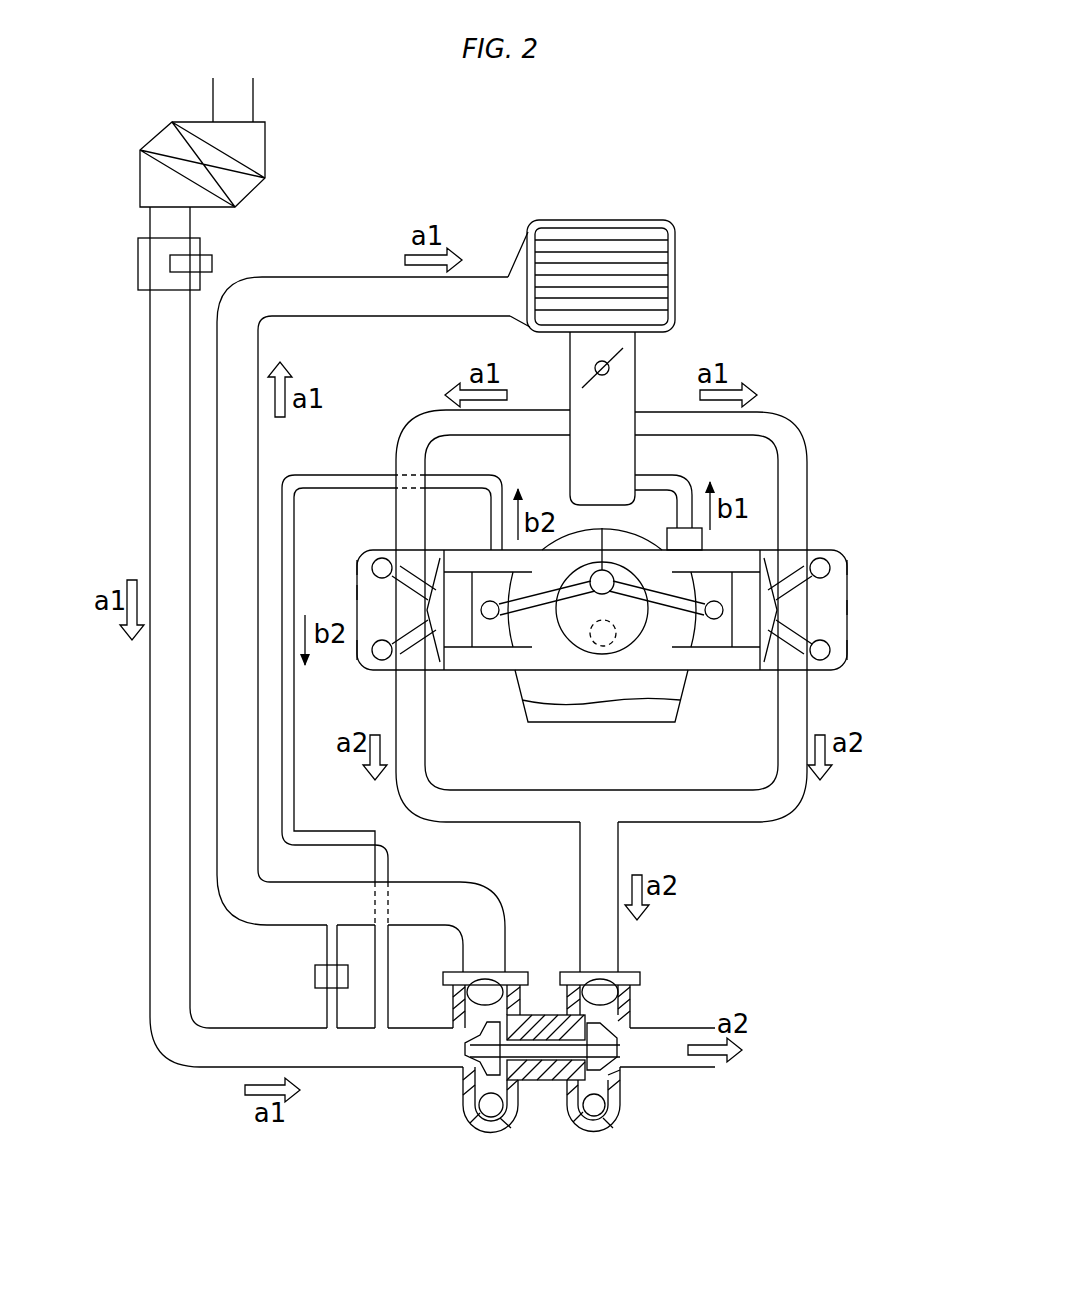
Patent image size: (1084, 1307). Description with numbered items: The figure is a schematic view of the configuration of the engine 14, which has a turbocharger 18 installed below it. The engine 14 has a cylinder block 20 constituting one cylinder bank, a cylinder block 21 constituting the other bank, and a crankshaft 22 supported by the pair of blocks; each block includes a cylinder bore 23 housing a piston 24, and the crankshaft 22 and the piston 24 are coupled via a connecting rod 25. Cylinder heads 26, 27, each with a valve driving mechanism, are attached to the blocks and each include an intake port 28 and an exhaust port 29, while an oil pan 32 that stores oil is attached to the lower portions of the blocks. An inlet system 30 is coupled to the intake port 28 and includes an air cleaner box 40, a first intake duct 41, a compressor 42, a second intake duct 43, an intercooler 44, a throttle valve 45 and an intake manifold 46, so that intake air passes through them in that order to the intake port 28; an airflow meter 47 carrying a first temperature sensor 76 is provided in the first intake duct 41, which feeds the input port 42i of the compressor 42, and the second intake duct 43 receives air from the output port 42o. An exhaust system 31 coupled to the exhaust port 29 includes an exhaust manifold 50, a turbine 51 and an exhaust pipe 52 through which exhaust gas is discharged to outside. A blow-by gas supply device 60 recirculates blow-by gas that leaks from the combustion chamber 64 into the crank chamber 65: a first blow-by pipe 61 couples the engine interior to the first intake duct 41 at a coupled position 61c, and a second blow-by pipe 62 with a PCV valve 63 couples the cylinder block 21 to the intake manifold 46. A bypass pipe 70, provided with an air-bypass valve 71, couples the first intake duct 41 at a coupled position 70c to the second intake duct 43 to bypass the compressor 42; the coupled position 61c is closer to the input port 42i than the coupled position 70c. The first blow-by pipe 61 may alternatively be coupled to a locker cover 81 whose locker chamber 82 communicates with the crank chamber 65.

The engine 14 is at (848, 548).
The turbocharger 18 is at (545, 1112).
The cylinder block 20 is at (500, 674).
The cylinder block 21 is at (692, 674).
The crankshaft 22 is at (592, 562).
The cylinder bore 23 is at (465, 580).
The piston 24 is at (704, 606).
The connecting rod 25 is at (592, 636).
The cylinder head 26 is at (355, 666).
The cylinder head 27 is at (851, 662).
The intake port 28 is at (412, 552).
The exhaust port 29 is at (410, 668).
The inlet system 30 is at (720, 180).
The exhaust system 31 is at (782, 868).
The oil pan 32 is at (580, 722).
The air cleaner box 40 is at (190, 121).
The first intake duct 41 is at (148, 795).
The compressor 42 is at (450, 1102).
The input port 42i is at (450, 1045).
The output port 42o is at (490, 975).
The second intake duct 43 is at (345, 275).
The intercooler 44 is at (598, 218).
The throttle valve 45 is at (583, 385).
The intake manifold 46 is at (803, 432).
The airflow meter 47 is at (143, 290).
The exhaust manifold 50 is at (790, 818).
The turbine 51 is at (631, 1094).
The exhaust pipe 52 is at (682, 1026).
The blow-by gas supply device 60 is at (216, 1110).
The first blow-by pipe 61 is at (368, 476).
The coupled position 61c is at (384, 1032).
The second blow-by pipe 62 is at (693, 480).
The PCV valve 63 is at (705, 536).
The combustion chamber 64 is at (428, 613).
The crank chamber 65 is at (576, 536).
The bypass pipe 70 is at (325, 947).
The coupled position 70c is at (332, 1032).
The air-bypass valve 71 is at (313, 978).
The first temperature sensor 76 is at (215, 262).
The locker cover 81 is at (372, 565).
The locker chamber 82 is at (372, 590).